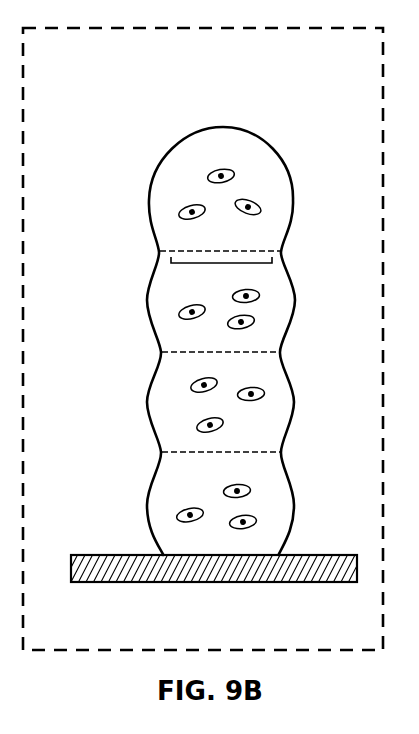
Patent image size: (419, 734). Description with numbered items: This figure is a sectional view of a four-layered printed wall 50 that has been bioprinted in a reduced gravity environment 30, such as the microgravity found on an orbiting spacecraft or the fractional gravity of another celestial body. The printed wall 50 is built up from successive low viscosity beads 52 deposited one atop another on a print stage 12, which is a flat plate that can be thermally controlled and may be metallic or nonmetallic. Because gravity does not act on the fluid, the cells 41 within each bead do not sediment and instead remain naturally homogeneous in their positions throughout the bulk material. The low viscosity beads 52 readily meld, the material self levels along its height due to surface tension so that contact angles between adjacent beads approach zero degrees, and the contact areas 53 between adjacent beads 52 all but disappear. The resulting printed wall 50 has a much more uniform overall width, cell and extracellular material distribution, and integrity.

The print stage 12 is at (162, 583).
The reduced gravity environment 30 is at (115, 655).
The cells 41 is at (237, 201).
The printed wall 50 is at (177, 102).
The low viscosity beads 52 is at (282, 190).
The contact areas 53 is at (218, 265).